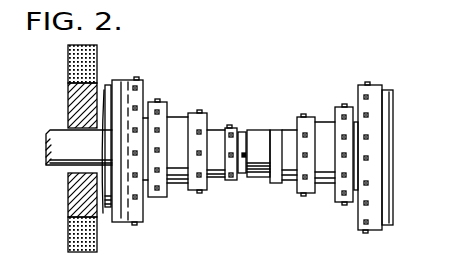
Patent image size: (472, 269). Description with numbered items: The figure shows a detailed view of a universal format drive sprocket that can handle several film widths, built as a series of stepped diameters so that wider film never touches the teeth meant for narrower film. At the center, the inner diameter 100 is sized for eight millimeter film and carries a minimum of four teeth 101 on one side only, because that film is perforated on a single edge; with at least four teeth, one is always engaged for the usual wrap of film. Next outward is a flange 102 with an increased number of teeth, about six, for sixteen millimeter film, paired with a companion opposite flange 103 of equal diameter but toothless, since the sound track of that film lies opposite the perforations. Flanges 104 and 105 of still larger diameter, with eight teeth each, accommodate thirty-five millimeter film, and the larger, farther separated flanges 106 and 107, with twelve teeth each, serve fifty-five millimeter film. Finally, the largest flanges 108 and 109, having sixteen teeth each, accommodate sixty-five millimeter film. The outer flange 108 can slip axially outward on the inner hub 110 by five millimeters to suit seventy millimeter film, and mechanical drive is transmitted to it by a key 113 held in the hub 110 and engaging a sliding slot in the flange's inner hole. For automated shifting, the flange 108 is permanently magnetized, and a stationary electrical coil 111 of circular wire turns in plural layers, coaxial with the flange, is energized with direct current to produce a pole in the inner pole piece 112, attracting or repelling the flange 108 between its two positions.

The inner diameter 100 is at (253, 166).
The teeth 101 is at (240, 132).
The flange 102 is at (228, 127).
The companion opposite flange 103 is at (277, 129).
The flange 104 is at (199, 194).
The flange 105 is at (303, 197).
The flange 106 is at (162, 103).
The flange 107 is at (343, 105).
The outer flange 108 is at (131, 225).
The flange 109 is at (366, 234).
The inner hub 110 is at (108, 210).
The electrical coil 111 is at (73, 237).
The inner pole piece 112 is at (70, 189).
The key 113 is at (104, 90).